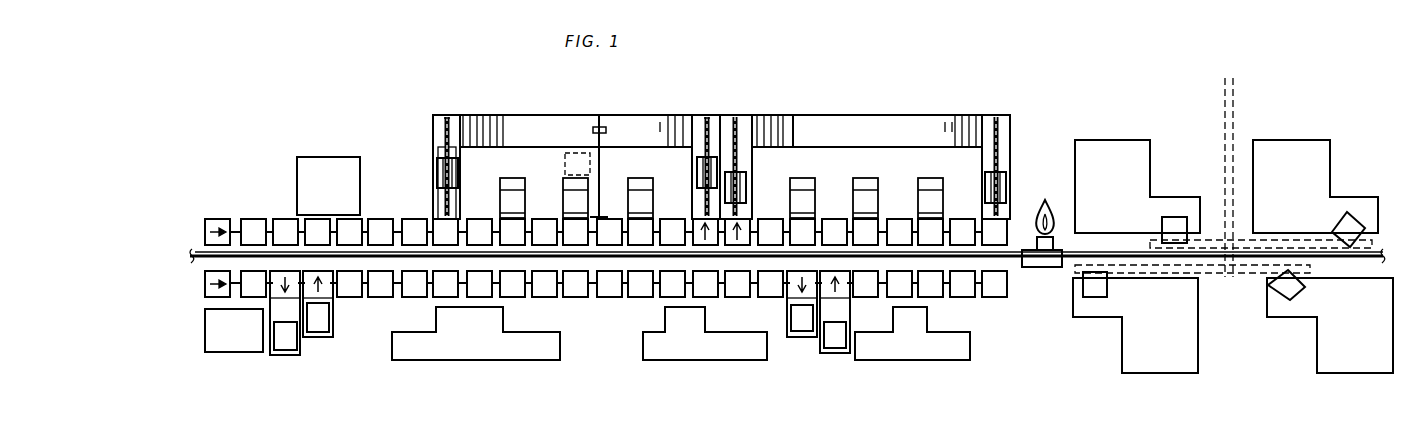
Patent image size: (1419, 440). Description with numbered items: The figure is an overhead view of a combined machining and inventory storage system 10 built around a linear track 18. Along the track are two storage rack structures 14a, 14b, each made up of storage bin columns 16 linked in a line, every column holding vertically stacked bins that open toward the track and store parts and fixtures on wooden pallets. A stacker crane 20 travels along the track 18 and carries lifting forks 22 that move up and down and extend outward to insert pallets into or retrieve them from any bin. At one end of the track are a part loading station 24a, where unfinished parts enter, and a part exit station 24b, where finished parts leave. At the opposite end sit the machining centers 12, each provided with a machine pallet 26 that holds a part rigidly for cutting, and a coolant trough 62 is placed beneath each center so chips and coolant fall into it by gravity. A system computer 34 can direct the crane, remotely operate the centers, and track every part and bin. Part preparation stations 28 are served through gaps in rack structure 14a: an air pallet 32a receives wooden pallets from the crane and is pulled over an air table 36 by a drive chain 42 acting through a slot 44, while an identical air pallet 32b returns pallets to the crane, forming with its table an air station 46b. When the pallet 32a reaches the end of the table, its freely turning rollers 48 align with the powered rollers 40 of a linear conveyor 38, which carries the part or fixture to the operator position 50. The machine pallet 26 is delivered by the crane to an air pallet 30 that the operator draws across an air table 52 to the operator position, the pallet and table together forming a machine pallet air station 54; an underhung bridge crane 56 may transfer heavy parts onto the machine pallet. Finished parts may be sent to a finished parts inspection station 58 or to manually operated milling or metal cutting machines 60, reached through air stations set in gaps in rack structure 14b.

The combined machining and inventory storage system 10 is at (228, 148).
The machining center 12 is at (1118, 191).
The storage rack structure 14a is at (268, 218).
The storage rack structure 14b is at (385, 297).
The storage bin column 16 is at (245, 222).
The linear track 18 is at (190, 260).
The stacker crane 20 is at (1045, 268).
The lifting forks 22 is at (1045, 214).
The part loading station 24a is at (203, 230).
The part exit station 24b is at (203, 292).
The machine pallet 26 is at (1175, 218).
The part preparation station 28 is at (540, 112).
The air pallet 30 is at (500, 206).
The air pallet 32a is at (697, 175).
The air pallet 32b is at (437, 172).
The system computer 34 is at (336, 192).
The air table 36 is at (433, 138).
The linear conveyor 38 is at (600, 115).
The powered rollers 40 is at (490, 115).
The drive chain 42 is at (433, 118).
The slot 44 is at (447, 115).
The air station 46b is at (433, 205).
The freely turning rollers 48 is at (740, 172).
The operator position 50 is at (592, 158).
The air table 52 is at (565, 183).
The machine pallet air station 54 is at (500, 185).
The underhung bridge crane 56 is at (606, 128).
The finished parts inspection station 58 is at (242, 339).
The manually operated milling or metal cutting machine 60 is at (477, 342).
The coolant trough 62 is at (1236, 115).